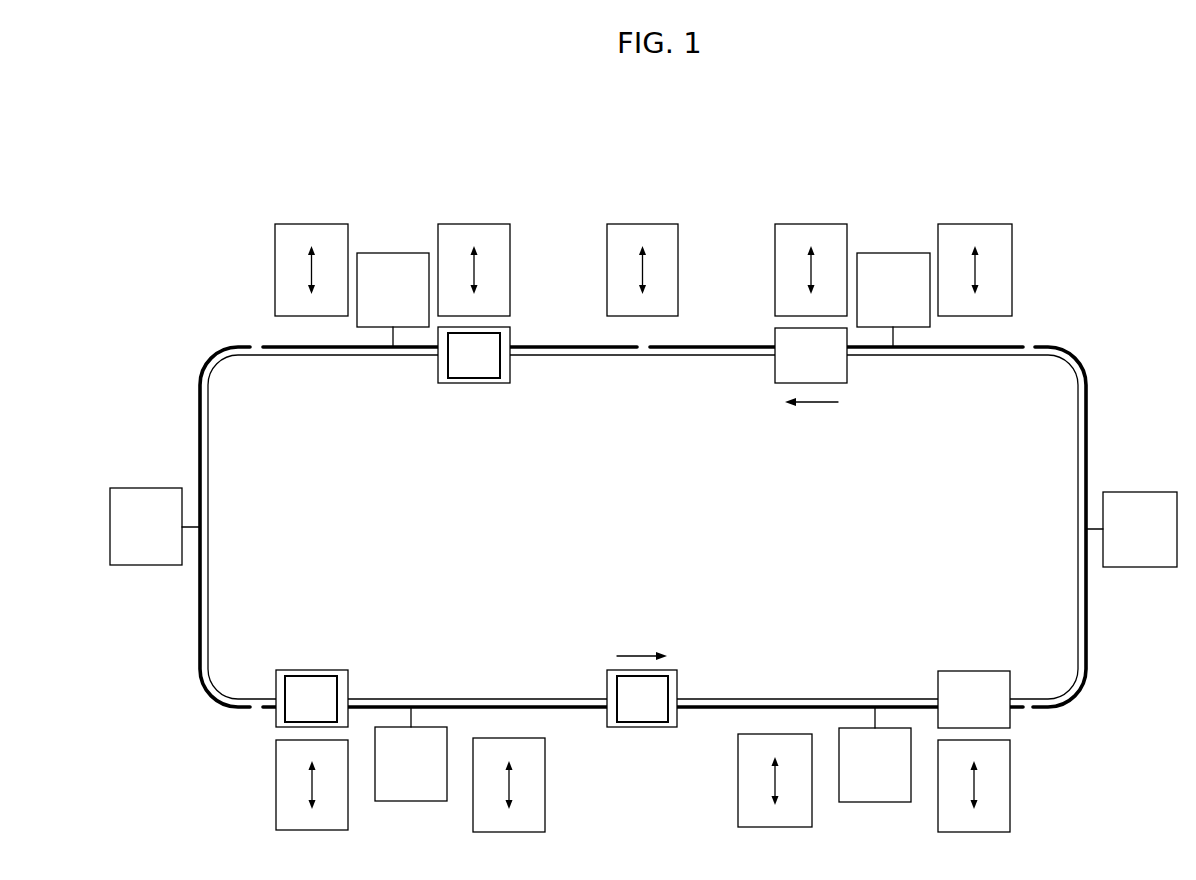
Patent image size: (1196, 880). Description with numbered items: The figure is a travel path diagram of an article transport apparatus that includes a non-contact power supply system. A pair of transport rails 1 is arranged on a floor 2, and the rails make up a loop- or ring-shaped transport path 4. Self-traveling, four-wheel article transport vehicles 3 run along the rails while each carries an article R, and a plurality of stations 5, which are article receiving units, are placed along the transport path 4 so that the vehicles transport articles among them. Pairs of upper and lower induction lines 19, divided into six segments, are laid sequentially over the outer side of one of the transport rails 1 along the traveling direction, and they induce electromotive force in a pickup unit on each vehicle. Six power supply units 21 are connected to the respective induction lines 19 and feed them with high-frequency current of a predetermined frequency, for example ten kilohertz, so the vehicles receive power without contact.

The transport rails 1 is at (1082, 601).
The floor 2 is at (946, 497).
The article transport vehicle 3 is at (510, 378).
The transport path 4 is at (1070, 334).
The station 5 is at (275, 260).
The induction lines 19 is at (643, 526).
The power supply unit 21 is at (402, 253).
The article R is at (470, 370).